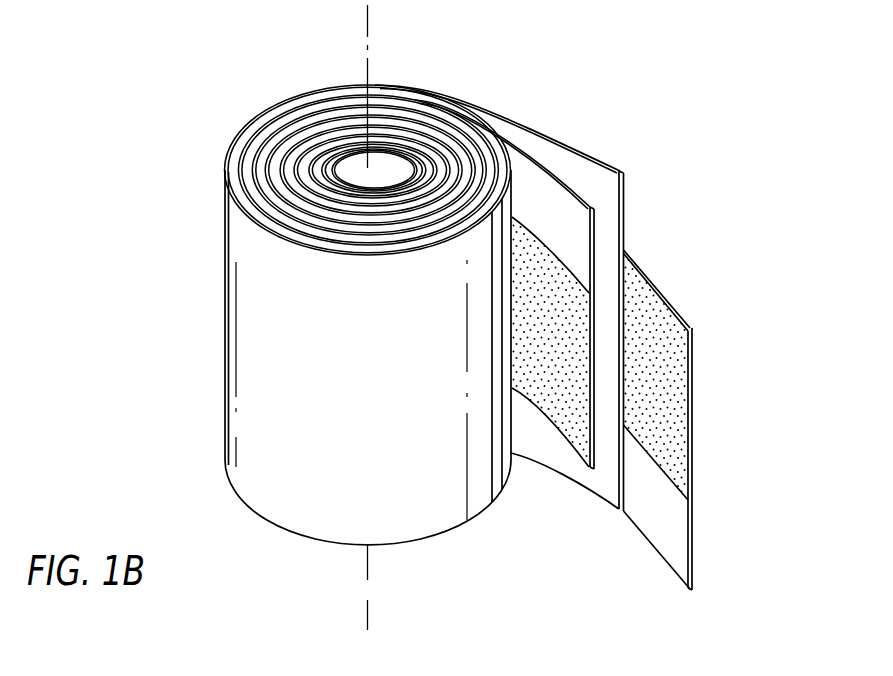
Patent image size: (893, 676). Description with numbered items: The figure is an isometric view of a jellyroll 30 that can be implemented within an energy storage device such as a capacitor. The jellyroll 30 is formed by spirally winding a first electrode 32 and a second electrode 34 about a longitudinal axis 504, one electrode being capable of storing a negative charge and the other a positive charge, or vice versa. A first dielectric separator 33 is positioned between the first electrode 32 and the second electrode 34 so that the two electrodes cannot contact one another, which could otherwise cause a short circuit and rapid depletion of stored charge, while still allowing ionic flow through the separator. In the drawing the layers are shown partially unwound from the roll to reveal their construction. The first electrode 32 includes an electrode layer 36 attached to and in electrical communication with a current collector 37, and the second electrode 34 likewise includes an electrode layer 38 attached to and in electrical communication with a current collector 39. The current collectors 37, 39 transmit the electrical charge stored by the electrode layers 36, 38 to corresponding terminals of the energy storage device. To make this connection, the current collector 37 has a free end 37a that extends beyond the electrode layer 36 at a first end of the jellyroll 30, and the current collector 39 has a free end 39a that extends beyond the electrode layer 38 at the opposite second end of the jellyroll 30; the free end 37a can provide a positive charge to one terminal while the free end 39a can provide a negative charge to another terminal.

The jellyroll 30 is at (648, 120).
The first electrode 32 is at (537, 127).
The first dielectric separator 33 is at (616, 226).
The second electrode 34 is at (697, 388).
The electrode layer 36 is at (572, 433).
The current collector 37 is at (581, 212).
The free end 37a is at (599, 293).
The electrode layer 38 is at (668, 323).
The current collector 39 is at (677, 545).
The free end 39a is at (695, 590).
The longitudinal axis 504 is at (369, 589).